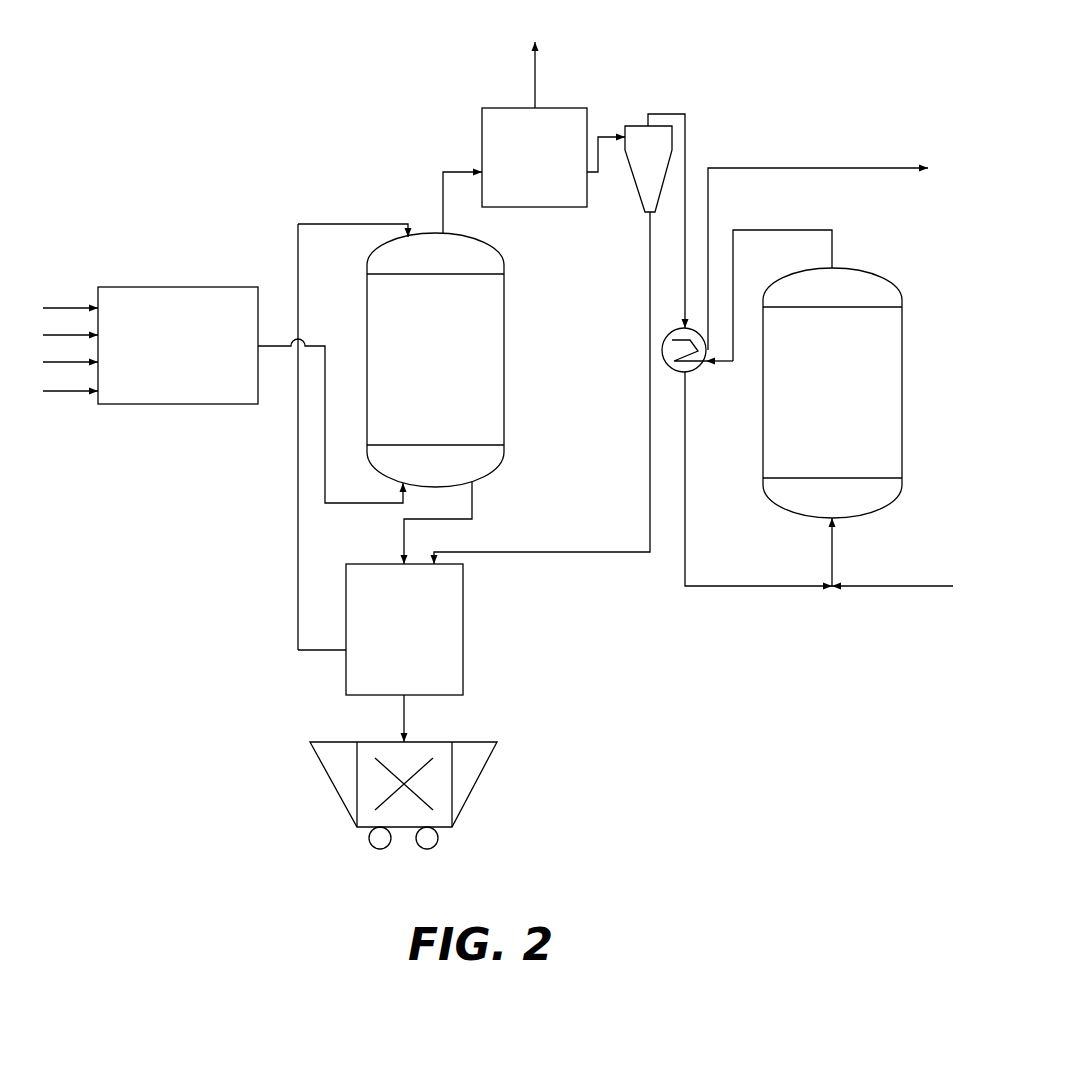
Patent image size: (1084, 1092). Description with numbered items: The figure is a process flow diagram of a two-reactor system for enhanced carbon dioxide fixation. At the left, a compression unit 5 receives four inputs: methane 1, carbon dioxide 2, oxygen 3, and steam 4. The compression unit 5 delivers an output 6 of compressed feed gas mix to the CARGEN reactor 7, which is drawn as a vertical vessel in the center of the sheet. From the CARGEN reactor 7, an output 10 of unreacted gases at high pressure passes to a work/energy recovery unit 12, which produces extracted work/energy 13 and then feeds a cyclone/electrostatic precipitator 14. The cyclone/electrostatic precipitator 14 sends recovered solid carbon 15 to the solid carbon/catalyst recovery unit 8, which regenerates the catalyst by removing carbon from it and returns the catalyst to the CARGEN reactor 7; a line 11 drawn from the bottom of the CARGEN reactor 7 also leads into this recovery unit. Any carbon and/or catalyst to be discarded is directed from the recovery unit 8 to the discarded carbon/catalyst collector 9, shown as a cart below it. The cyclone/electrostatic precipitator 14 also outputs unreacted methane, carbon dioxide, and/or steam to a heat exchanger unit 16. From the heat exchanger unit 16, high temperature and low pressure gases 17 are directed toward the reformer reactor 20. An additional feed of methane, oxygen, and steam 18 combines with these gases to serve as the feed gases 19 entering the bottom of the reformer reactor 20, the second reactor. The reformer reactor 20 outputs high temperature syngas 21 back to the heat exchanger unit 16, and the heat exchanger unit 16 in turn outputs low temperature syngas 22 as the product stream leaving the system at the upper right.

The methane 1 is at (48, 306).
The carbon dioxide 2 is at (70, 334).
The oxygen 3 is at (62, 363).
The steam 4 is at (82, 392).
The compression unit 5 is at (177, 287).
The output of compressed feed gas mix 6 is at (325, 448).
The CARGEN reactor 7 is at (504, 372).
The solid carbon/catalyst recovery unit 8 is at (463, 623).
The discarded carbon/catalyst collector 9 is at (470, 742).
The output of unreacted gases 10 is at (443, 160).
The solids outlet line from CARGEN reactor 11 is at (404, 527).
The work/energy recovery unit 12 is at (538, 207).
The extracted work/energy 13 is at (535, 65).
The cyclone/electrostatic precipitator 14 is at (630, 126).
The recovered solid carbon 15 is at (650, 315).
The heat exchanger unit 16 is at (695, 366).
The high temperature and low pressure gases 17 is at (722, 586).
The additional feed of methane, oxygen, and steam 18 is at (895, 586).
The feed gases 19 is at (832, 548).
The reformer reactor 20 is at (902, 335).
The high temperature syngas 21 is at (832, 230).
The low temperature syngas 22 is at (866, 168).